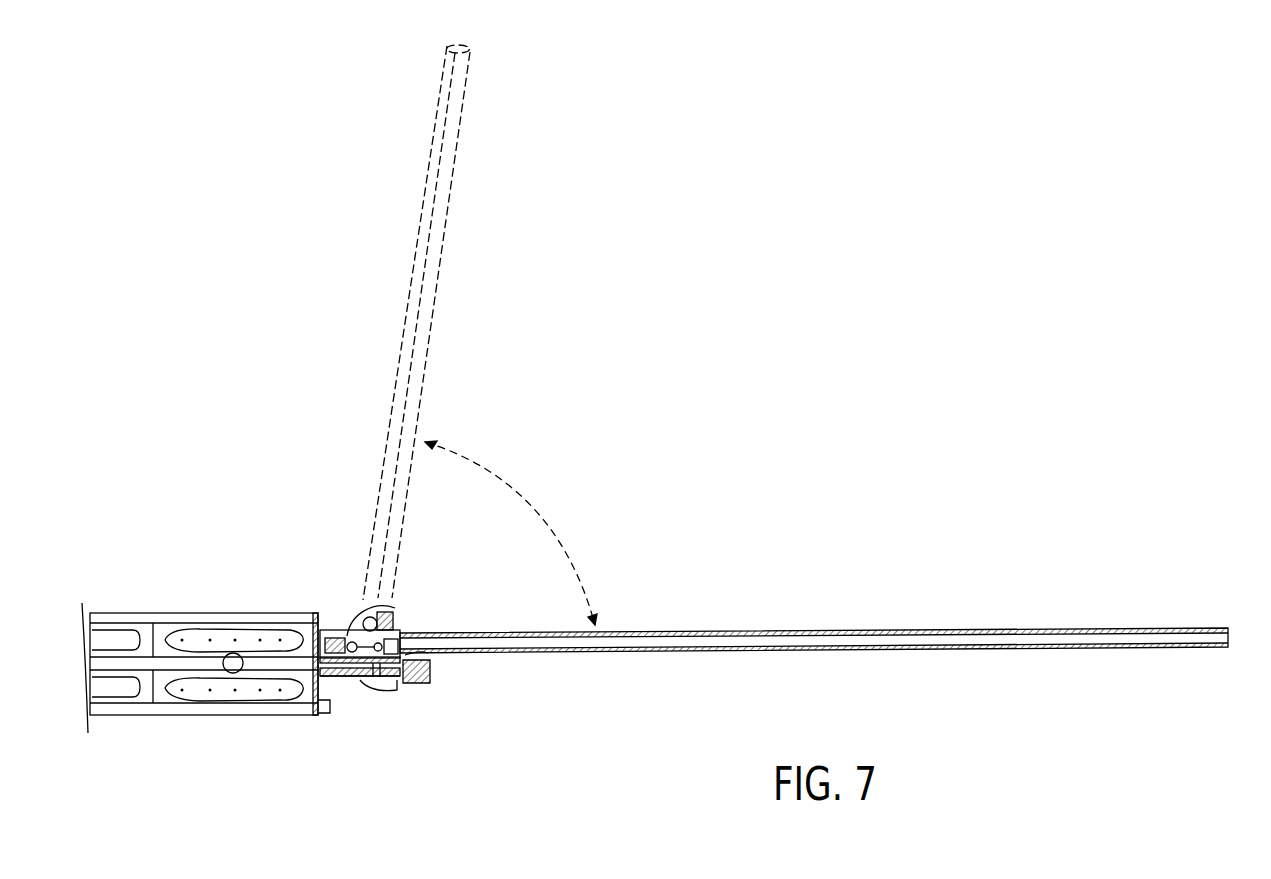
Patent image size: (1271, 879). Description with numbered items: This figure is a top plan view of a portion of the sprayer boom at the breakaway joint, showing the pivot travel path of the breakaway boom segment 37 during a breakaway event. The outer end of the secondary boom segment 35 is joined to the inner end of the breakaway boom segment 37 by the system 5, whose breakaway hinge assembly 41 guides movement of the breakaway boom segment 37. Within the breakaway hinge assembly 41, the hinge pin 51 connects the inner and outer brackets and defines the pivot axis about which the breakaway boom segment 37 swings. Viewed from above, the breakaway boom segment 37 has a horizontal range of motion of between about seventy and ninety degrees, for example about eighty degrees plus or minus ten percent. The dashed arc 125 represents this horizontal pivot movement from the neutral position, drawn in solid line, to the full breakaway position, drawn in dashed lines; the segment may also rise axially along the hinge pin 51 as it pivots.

The secondary boom segment 35 is at (128, 622).
The system 5 is at (340, 603).
The breakaway boom segment 37 is at (800, 650).
The hinge pin 51 is at (428, 653).
The breakaway hinge assembly 41 is at (340, 703).
The dashed arc 125 is at (535, 508).